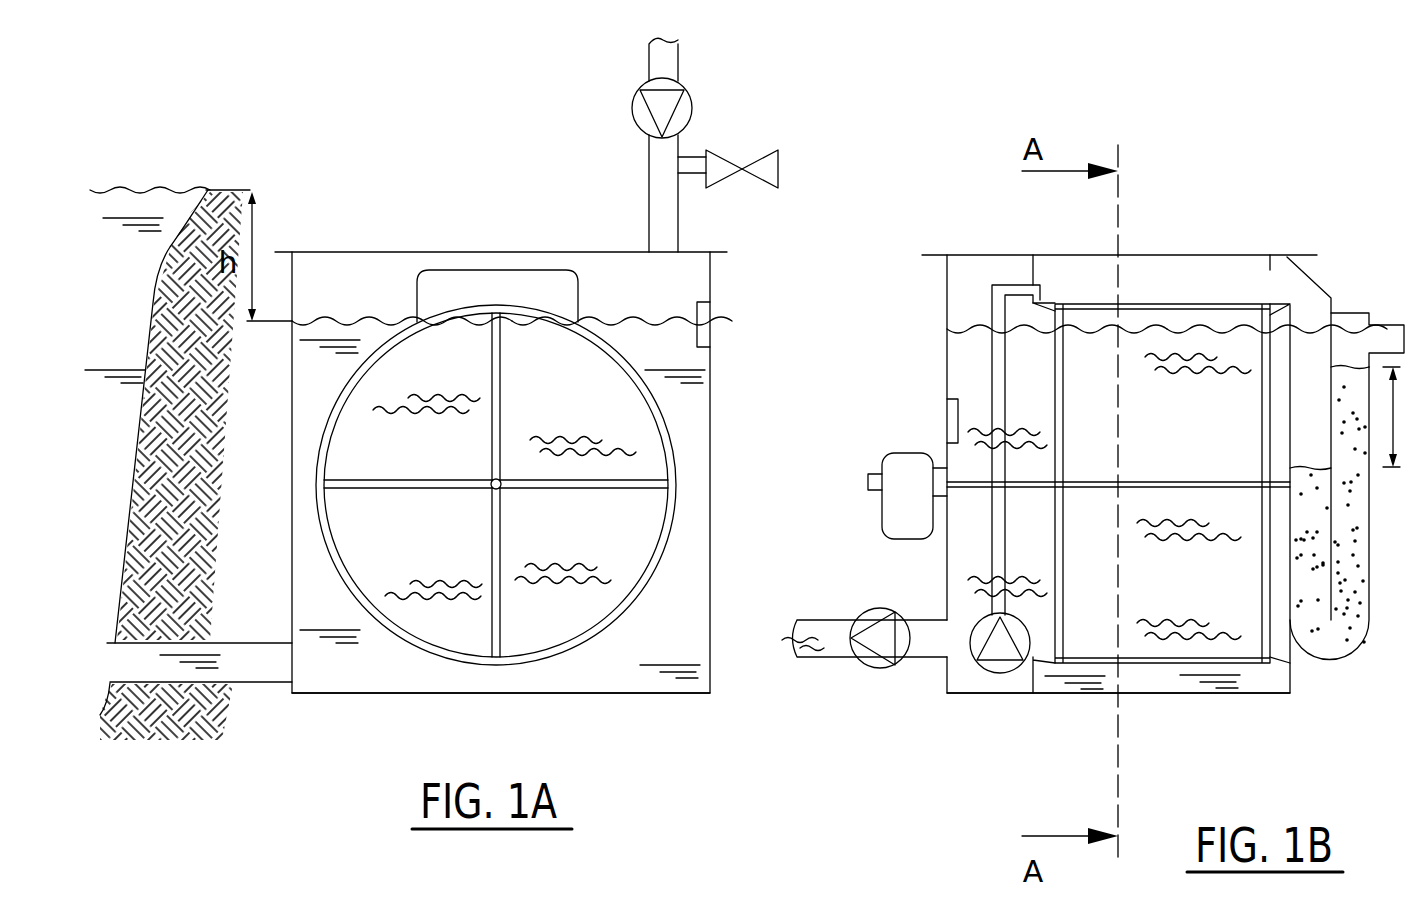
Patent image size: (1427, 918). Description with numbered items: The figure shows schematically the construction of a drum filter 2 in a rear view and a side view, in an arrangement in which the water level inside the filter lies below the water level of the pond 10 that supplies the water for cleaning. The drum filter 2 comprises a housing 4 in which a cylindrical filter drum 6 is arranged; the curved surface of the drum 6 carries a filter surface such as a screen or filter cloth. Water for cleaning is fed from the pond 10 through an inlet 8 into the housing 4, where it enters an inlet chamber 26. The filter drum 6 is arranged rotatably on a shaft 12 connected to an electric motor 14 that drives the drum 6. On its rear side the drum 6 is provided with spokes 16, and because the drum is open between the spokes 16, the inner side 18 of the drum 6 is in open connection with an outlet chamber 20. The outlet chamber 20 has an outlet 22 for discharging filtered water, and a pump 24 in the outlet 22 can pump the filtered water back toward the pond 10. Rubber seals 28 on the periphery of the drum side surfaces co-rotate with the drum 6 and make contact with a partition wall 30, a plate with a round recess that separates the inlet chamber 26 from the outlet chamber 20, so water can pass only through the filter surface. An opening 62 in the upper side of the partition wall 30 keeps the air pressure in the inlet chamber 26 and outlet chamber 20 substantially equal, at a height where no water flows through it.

In FIG. 1A, the drum filter 2 is at (480, 178).
In FIG. 1B, the drum filter 2 is at (962, 148).
In FIG. 1A, the housing 4 is at (350, 252).
In FIG. 1B, the housing 4 is at (1225, 255).
In FIG. 1A, the cylindrical filter drum 6 is at (660, 314).
In FIG. 1B, the cylindrical filter drum 6 is at (1060, 337).
In FIG. 1A, the inlet 8 is at (245, 642).
In FIG. 1A, the pond 10 is at (126, 289).
In FIG. 1B, the shaft 12 is at (1088, 469).
In FIG. 1B, the electric motor 14 is at (913, 470).
In FIG. 1A, the spokes 16 is at (497, 355).
In FIG. 1B, the inner side of drum 18 is at (1183, 434).
In FIG. 1B, the outlet chamber 20 is at (1018, 539).
In FIG. 1B, the outlet 22 is at (932, 647).
In FIG. 1B, the pump 24 is at (863, 665).
In FIG. 1A, the inlet chamber 26 is at (653, 632).
In FIG. 1B, the inlet chamber 26 is at (1168, 682).
In FIG. 1A, the rubber seals 28 is at (662, 400).
In FIG. 1B, the rubber seals 28 is at (1273, 302).
In FIG. 1B, the partition wall 30 is at (1027, 677).
In FIG. 1B, the opening 62 is at (1033, 273).